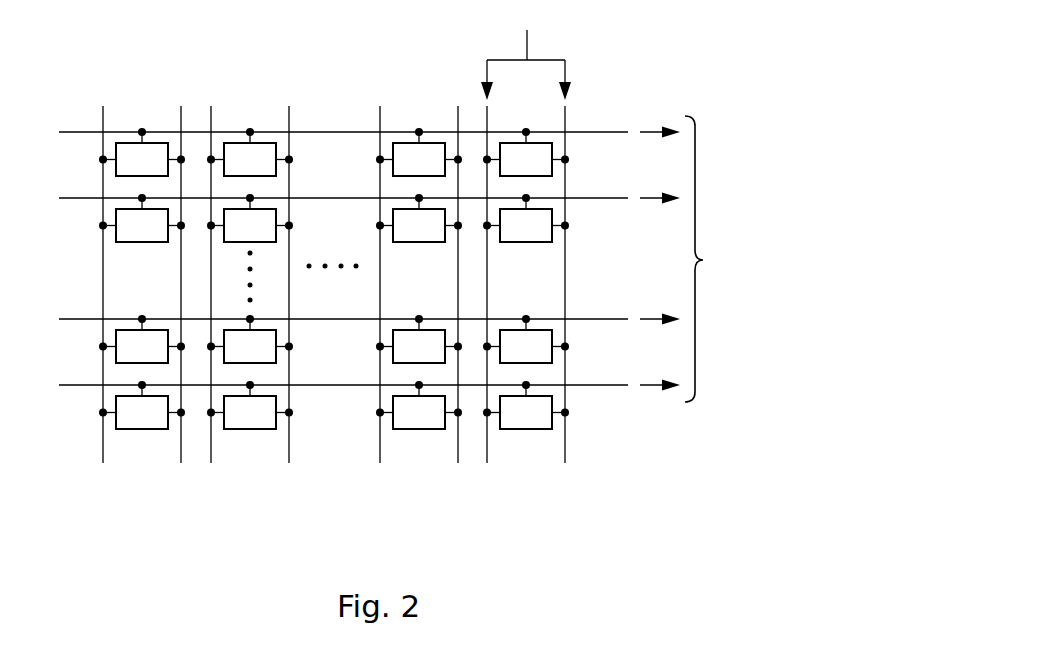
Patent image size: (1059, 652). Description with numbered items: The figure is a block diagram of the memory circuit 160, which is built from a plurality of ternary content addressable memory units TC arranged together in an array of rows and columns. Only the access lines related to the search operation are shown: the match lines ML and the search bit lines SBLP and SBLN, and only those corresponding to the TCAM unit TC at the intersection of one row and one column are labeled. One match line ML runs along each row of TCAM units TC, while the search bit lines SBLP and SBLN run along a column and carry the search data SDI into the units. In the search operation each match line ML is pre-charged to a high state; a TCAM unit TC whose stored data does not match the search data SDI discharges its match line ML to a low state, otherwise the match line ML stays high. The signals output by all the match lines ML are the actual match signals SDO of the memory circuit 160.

The memory circuit 160 is at (747, 30).
The match line ML is at (609, 129).
The search data SDI is at (526, 52).
The actual match signals SDO is at (698, 259).
The search bit line SBLP is at (484, 464).
The search bit line SBLN is at (568, 464).
The ternary content addressable memory unit TC is at (334, 278).